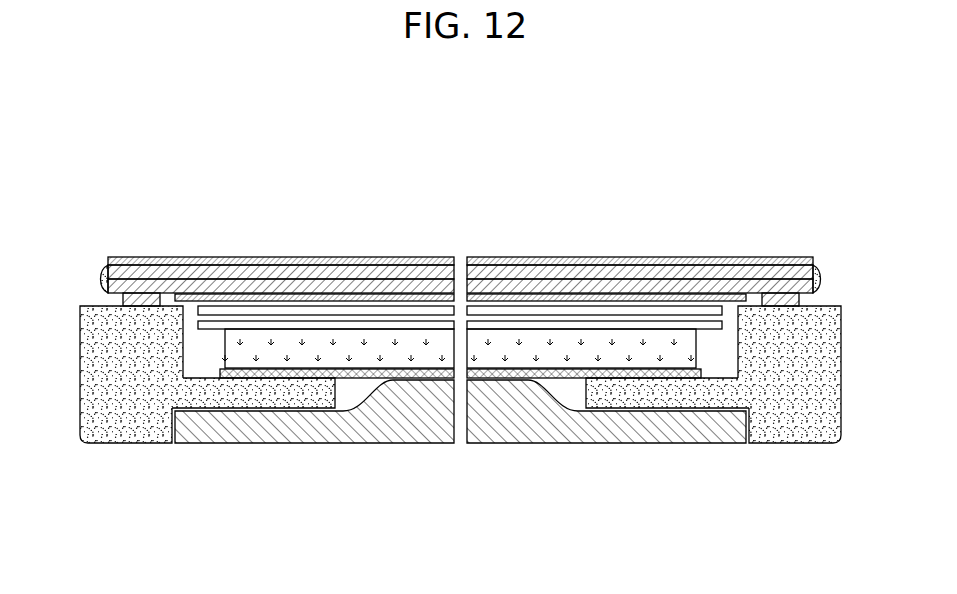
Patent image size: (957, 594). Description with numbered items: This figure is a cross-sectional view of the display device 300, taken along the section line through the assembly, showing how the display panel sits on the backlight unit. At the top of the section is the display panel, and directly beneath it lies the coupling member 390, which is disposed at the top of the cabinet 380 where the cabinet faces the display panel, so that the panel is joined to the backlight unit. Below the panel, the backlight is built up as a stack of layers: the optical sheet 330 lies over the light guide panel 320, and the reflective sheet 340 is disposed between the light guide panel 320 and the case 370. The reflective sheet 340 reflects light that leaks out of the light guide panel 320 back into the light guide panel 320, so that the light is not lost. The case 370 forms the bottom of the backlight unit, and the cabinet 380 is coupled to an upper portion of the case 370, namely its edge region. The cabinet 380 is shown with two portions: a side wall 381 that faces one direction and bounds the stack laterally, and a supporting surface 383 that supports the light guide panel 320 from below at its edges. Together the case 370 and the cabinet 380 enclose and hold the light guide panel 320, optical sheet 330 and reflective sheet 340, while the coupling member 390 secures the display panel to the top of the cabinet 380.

The display device 300 is at (269, 163).
The light guide panel 320 is at (548, 352).
The optical sheet 330 is at (588, 300).
The reflective sheet 340 is at (503, 370).
The case 370 is at (537, 418).
The cabinet 380 is at (460, 427).
The side wall 381 is at (790, 390).
The supporting surface 383 is at (720, 390).
The coupling member 390 is at (133, 303).